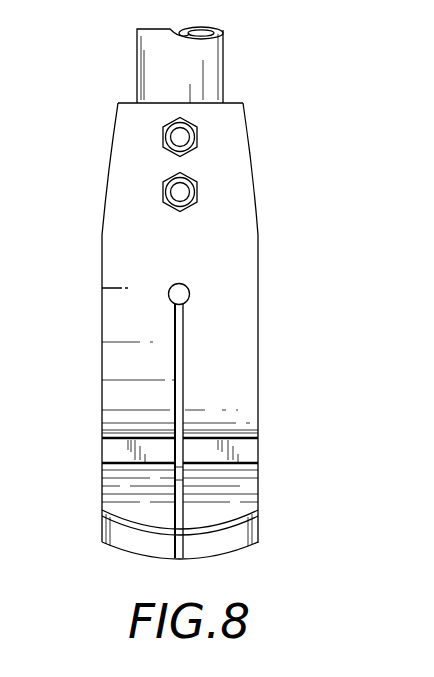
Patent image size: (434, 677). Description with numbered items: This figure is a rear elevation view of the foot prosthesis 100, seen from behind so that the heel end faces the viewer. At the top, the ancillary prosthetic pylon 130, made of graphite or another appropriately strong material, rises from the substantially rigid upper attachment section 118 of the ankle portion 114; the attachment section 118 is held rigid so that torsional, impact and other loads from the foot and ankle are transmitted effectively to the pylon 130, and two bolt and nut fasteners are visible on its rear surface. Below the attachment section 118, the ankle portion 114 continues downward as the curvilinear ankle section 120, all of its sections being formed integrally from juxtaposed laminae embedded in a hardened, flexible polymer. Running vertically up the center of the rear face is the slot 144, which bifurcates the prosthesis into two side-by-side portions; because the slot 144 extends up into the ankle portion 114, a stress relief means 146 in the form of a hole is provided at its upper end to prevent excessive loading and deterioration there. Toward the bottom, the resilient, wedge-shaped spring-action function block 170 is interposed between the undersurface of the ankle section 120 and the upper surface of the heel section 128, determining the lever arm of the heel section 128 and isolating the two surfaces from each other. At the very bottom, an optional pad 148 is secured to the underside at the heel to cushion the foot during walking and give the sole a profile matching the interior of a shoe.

The foot prosthesis 100 is at (84, 141).
The ancillary prosthetic pylon 130 is at (233, 83).
The upper attachment section 118 is at (238, 150).
The ankle portion 114 is at (268, 232).
The stress relief means 146 is at (196, 289).
The slot 144 is at (194, 361).
The curvilinear ankle section 120 is at (243, 347).
The function block 170 is at (246, 450).
The heel section 128 is at (248, 489).
The pads 148 is at (250, 533).